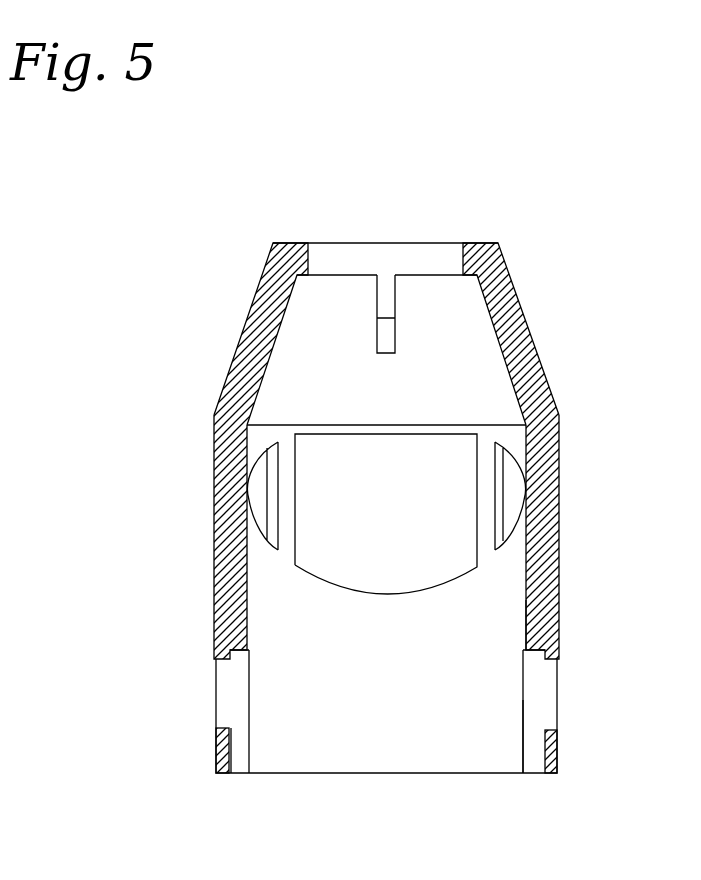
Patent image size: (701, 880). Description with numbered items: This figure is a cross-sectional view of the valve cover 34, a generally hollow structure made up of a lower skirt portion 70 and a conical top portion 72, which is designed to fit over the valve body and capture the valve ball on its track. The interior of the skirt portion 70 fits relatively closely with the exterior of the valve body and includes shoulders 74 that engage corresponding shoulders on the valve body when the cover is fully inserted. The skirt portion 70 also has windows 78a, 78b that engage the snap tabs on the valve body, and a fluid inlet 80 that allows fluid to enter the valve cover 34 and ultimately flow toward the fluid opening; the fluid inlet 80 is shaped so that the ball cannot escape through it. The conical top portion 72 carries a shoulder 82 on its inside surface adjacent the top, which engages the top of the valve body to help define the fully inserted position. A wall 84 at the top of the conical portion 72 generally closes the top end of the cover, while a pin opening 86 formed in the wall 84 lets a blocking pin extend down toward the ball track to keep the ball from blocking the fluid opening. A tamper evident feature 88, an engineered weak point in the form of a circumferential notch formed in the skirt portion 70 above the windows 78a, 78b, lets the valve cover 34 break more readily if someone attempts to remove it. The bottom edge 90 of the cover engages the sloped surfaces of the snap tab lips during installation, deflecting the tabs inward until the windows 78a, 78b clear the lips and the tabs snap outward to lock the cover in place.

The valve cover 34 is at (188, 460).
The skirt portion 70 is at (564, 575).
The conical top portion 72 is at (530, 318).
The shoulders 74 is at (233, 652).
The window 78a is at (224, 707).
The window 78b is at (545, 700).
The fluid inlet 80 is at (337, 458).
The shoulder 82 is at (385, 311).
The wall 84 is at (305, 258).
The pin opening 86 is at (410, 258).
The tamper evident feature 88 is at (547, 625).
The bottom edge 90 is at (553, 773).